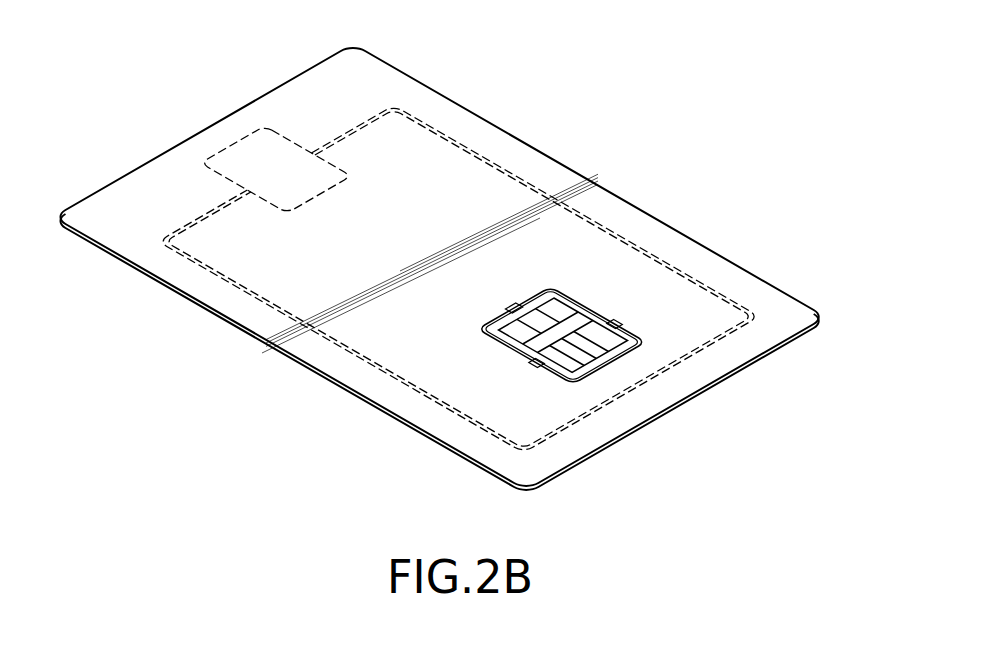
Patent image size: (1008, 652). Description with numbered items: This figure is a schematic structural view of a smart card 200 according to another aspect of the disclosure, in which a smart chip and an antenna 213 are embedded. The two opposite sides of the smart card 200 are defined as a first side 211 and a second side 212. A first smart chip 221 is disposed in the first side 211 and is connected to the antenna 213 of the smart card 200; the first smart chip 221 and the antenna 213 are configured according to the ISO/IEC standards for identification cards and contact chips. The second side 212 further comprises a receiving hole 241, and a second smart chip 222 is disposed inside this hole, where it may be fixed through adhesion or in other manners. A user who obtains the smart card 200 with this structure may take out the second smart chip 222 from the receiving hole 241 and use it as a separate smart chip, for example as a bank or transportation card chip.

The smart card 200 is at (439, 269).
The first side 211 is at (439, 267).
The second side 212 is at (439, 271).
The antenna 213 is at (458, 279).
The first smart chip 221 is at (276, 169).
The second smart chip 222 is at (562, 335).
The receiving hole 241 is at (547, 327).